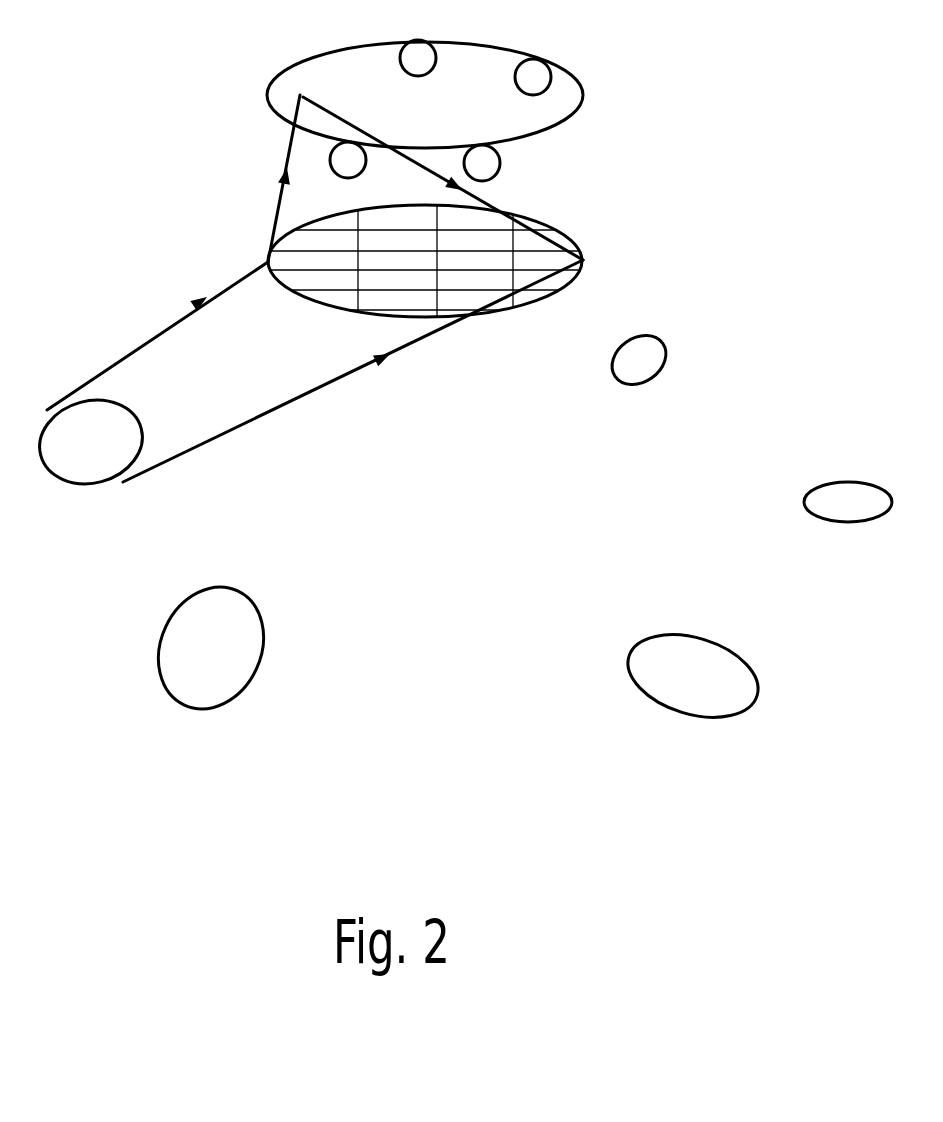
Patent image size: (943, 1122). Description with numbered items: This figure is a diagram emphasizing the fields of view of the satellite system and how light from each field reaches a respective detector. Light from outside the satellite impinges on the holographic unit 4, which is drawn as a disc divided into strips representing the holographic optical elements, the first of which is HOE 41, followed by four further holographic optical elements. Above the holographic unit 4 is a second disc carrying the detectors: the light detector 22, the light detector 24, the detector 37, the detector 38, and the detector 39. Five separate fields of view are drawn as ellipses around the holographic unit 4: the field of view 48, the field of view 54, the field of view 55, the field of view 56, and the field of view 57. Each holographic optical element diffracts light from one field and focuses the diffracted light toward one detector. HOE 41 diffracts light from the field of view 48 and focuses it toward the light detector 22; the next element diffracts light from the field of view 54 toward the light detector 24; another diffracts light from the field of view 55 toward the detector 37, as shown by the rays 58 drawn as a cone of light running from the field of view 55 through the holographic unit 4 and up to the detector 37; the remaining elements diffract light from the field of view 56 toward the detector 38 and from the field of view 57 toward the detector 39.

The holographic unit 4 is at (298, 228).
The light detector 22 is at (348, 160).
The light detector 24 is at (482, 163).
The detector 37 is at (425, 95).
The detector 38 is at (418, 58).
The detector 39 is at (533, 77).
The HOE 41 is at (303, 270).
The field of view 48 is at (211, 648).
The field of view 54 is at (693, 676).
The field of view 55 is at (91, 442).
The field of view 56 is at (639, 359).
The field of view 57 is at (848, 502).
The rays 58 is at (330, 367).